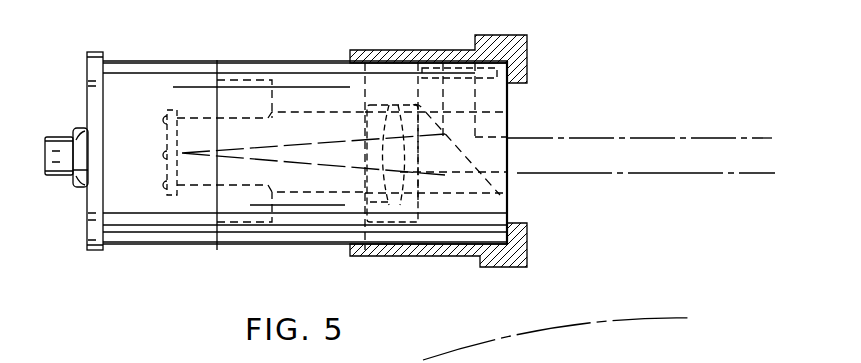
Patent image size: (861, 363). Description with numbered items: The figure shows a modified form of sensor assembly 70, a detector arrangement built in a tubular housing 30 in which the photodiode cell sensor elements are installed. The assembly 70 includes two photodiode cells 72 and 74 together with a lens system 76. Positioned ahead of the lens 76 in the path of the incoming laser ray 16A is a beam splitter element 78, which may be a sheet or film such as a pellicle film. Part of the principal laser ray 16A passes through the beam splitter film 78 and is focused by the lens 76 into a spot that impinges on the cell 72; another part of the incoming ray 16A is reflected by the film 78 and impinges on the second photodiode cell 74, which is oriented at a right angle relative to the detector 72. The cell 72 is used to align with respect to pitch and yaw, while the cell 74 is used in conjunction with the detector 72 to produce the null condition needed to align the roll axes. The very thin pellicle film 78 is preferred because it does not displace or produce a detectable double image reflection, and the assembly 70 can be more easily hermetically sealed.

The tubular housing 30 is at (252, 60).
The sensor assembly 70 is at (245, 250).
The photodiode cell 72 is at (172, 197).
The photodiode cell 74 is at (442, 70).
The lens system 76 is at (420, 268).
The beam splitter element 78 is at (458, 153).
The incoming laser ray 16A is at (737, 120).